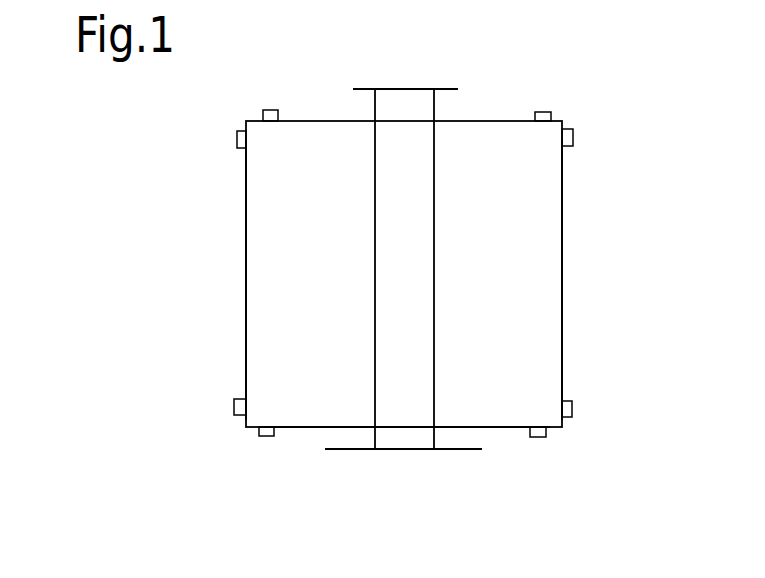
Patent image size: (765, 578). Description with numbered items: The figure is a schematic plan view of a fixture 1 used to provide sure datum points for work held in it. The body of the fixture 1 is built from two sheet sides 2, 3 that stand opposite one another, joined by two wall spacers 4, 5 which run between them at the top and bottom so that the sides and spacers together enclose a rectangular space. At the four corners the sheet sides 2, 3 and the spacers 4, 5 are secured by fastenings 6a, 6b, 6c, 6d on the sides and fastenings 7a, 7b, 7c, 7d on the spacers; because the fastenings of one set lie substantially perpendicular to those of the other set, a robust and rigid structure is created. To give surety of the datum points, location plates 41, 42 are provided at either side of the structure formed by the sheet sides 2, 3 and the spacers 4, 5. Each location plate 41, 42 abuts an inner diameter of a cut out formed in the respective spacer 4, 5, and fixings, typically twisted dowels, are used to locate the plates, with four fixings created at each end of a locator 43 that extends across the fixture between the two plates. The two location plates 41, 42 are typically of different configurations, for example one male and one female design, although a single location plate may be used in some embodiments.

The fixture 1 is at (603, 207).
The sheet side 2 is at (246, 295).
The sheet side 3 is at (562, 332).
The wall spacer 4 is at (307, 427).
The wall spacer 5 is at (493, 122).
The fastening 6a is at (573, 140).
The fastening 6b is at (572, 408).
The fastening 6c is at (234, 407).
The fastening 6d is at (237, 140).
The fastening 7a is at (551, 113).
The fastening 7b is at (546, 432).
The fastening 7c is at (259, 431).
The fastening 7d is at (263, 114).
The location plate 41 is at (360, 449).
The location plate 42 is at (447, 87).
The locator 43 is at (418, 283).